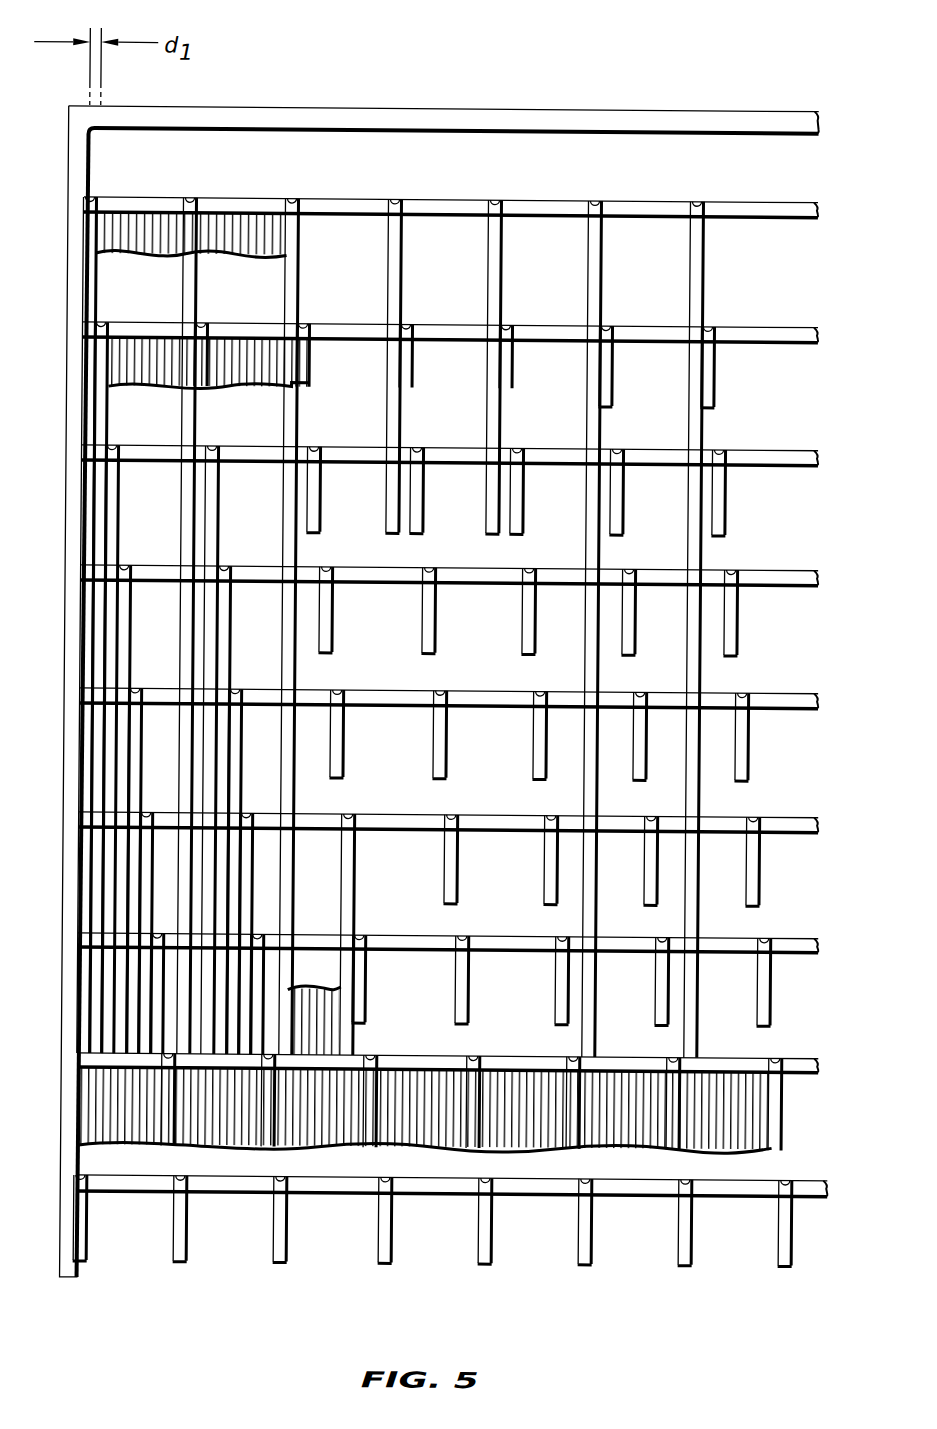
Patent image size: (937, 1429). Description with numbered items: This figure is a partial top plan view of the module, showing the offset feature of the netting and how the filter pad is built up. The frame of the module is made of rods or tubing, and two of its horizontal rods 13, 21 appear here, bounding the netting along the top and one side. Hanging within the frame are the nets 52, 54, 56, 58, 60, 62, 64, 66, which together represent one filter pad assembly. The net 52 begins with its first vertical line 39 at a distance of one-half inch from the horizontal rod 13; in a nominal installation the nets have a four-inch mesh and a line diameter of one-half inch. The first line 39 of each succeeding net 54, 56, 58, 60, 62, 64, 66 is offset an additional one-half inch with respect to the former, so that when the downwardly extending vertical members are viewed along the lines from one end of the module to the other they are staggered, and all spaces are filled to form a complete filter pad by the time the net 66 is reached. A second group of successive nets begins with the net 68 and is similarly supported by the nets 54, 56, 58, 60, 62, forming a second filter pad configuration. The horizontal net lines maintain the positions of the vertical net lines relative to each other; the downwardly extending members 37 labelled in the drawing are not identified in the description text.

The horizontal rod 13 is at (67, 213).
The horizontal rod 21 is at (413, 96).
The posts 37 is at (186, 166).
The first vertical line 39 is at (88, 237).
The net 52 is at (125, 194).
The net 54 is at (100, 338).
The net 56 is at (93, 457).
The net 58 is at (105, 573).
The net 60 is at (100, 703).
The net 62 is at (105, 820).
The net 64 is at (105, 940).
The net 66 is at (110, 1068).
The net 68 is at (116, 1194).